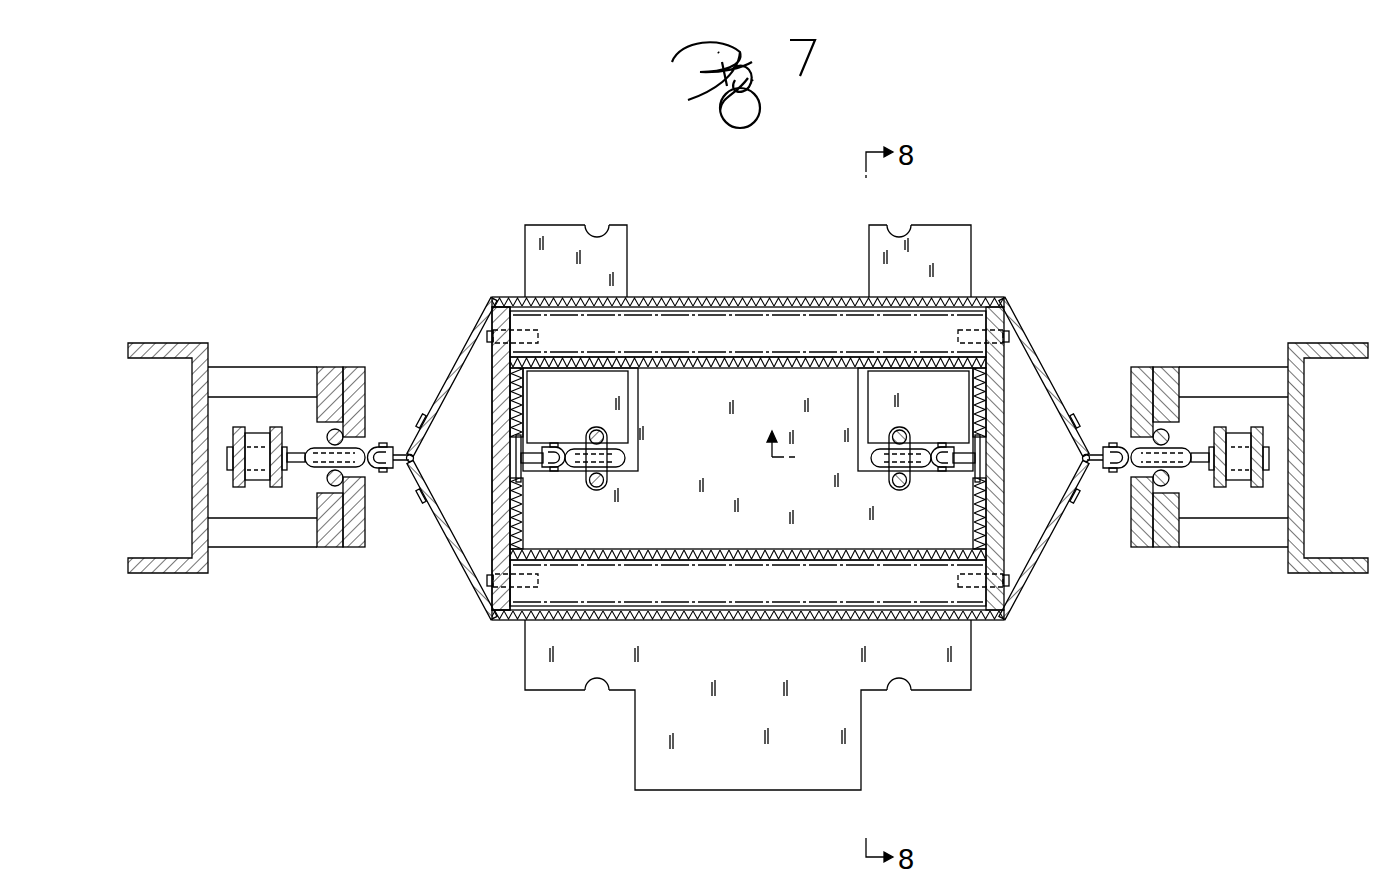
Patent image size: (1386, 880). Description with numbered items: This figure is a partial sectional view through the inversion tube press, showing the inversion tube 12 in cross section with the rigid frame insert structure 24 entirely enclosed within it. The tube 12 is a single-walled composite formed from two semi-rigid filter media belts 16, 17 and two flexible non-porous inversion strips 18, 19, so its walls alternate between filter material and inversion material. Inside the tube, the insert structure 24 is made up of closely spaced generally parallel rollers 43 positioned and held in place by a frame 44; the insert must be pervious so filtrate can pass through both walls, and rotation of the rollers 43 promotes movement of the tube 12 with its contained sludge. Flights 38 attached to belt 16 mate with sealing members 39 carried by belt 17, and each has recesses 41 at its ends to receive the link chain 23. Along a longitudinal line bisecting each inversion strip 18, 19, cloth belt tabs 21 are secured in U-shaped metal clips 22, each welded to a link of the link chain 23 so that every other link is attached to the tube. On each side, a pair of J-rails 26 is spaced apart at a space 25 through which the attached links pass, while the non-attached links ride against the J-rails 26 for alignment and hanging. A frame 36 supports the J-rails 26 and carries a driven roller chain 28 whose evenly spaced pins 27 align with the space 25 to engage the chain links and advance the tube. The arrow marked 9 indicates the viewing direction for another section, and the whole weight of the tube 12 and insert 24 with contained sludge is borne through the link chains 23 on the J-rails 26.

The section line arrow 9 is at (779, 429).
The inversion tube 12 is at (748, 428).
The filter media belt 16 is at (771, 297).
The filter media belt 17 is at (763, 609).
The inversion strip 18 is at (448, 380).
The inversion strip 19 is at (1032, 358).
The cloth belt tab 21 is at (413, 487).
The U-shaped metal clip 22 is at (376, 444).
The link chain 23 is at (312, 468).
The rigid frame insert structure 24 is at (490, 388).
The space between J-rails 25 is at (373, 472).
The J-rail 26 is at (365, 373).
The pin 27 is at (299, 452).
The roller chain 28 is at (258, 430).
The frame 36 is at (197, 523).
The flight 38 is at (706, 500).
The sealing member 39 is at (600, 262).
The recess 41 is at (598, 240).
The roller 43 is at (807, 333).
The frame 44 is at (500, 483).